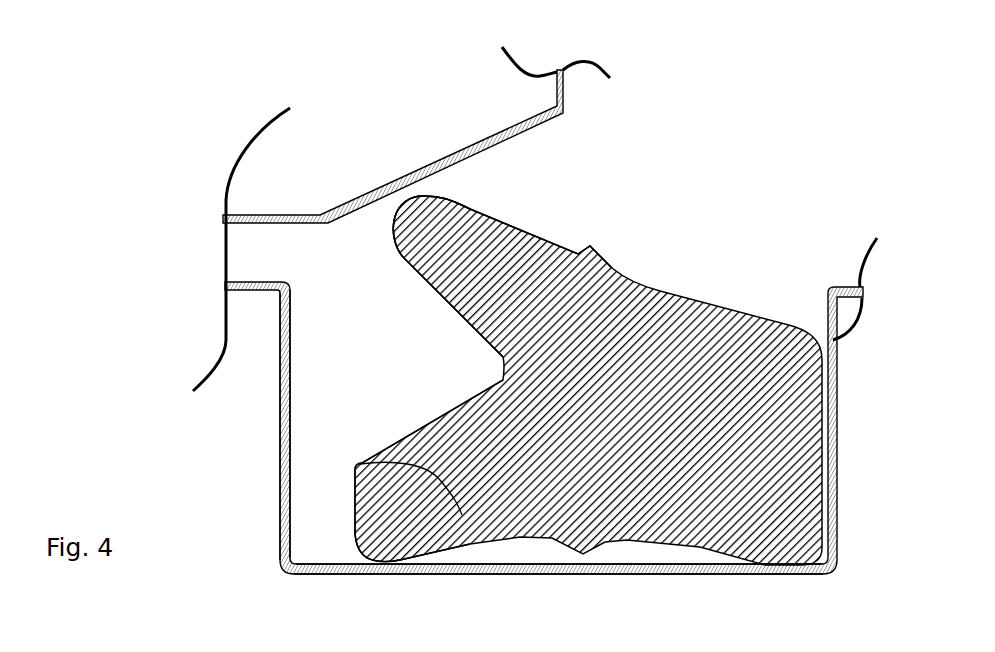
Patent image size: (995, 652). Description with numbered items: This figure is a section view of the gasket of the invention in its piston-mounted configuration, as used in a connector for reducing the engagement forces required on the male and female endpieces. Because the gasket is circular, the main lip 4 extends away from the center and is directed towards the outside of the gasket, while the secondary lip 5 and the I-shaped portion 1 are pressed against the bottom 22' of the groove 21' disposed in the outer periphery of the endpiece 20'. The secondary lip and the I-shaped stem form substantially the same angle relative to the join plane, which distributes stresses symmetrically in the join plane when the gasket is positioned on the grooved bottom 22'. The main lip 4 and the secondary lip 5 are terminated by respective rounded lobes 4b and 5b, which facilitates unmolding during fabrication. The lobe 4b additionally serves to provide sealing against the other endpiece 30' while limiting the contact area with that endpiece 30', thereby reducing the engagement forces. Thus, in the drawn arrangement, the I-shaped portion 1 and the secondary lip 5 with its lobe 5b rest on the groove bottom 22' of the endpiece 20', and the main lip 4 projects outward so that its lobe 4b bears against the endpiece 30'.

The I-shaped portion 1 is at (763, 492).
The main lip 4 is at (487, 263).
The rounded lobe 4b is at (392, 203).
The secondary lip 5 is at (357, 468).
The rounded lobe 5b is at (358, 572).
The endpiece 20' is at (472, 341).
The groove 21' is at (259, 425).
The bottom of the groove 22' is at (517, 551).
The endpiece 30' is at (447, 135).